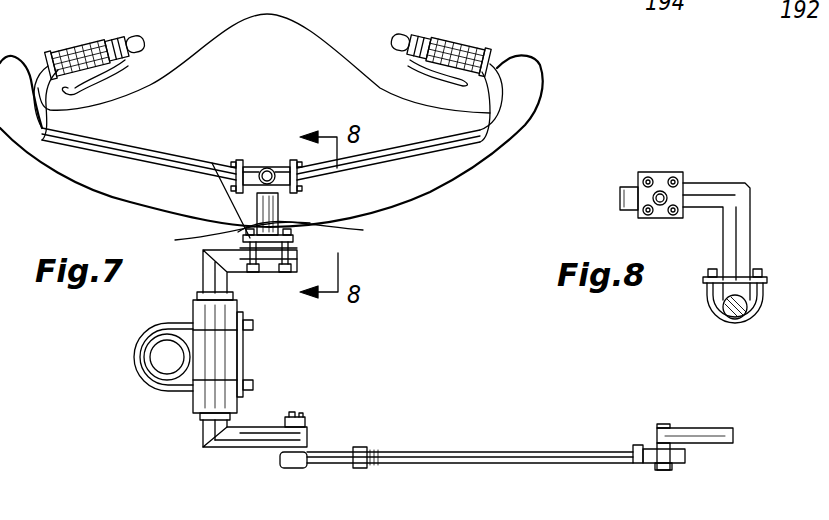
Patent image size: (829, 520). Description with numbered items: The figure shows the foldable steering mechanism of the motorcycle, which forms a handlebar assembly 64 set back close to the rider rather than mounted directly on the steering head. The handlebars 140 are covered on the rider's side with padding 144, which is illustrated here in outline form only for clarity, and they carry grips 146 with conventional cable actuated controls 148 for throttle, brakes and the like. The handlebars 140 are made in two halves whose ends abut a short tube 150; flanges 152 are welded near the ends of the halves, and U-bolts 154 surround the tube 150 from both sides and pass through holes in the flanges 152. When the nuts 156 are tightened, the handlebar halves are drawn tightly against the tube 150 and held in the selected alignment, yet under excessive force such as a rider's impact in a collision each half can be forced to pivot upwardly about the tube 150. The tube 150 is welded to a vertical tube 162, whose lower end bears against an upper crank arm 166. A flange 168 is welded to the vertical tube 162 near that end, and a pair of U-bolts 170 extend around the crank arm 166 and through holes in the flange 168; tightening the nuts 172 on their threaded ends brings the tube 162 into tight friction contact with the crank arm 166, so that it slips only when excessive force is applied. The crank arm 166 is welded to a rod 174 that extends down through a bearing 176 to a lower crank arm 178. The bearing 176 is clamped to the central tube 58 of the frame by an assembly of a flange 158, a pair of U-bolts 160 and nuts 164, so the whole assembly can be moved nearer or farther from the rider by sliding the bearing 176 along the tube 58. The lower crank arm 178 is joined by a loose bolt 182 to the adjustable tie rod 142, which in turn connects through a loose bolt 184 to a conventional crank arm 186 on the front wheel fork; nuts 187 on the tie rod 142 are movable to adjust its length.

In FIG. 7, the central tube 58 is at (157, 383).
In FIG. 7, the handlebar assembly 64 is at (72, 206).
In FIG. 7, the handlebars 140 is at (150, 153).
In FIG. 8, the handlebars 140 is at (683, 193).
In FIG. 7, the tie rod 142 is at (530, 420).
In FIG. 7, the padding 144 is at (225, 32).
In FIG. 7, the grips 146 is at (70, 52).
In FIG. 7, the cable actuated controls 148 is at (72, 92).
In FIG. 7, the tube 150 is at (265, 163).
In FIG. 8, the tube 150 is at (623, 200).
In FIG. 7, the flanges 152 is at (243, 163).
In FIG. 8, the flanges 152 is at (640, 218).
In FIG. 7, the U-bolts 154 is at (221, 207).
In FIG. 7, the nuts 156 is at (230, 176).
In FIG. 8, the nuts 156 is at (671, 178).
In FIG. 7, the flange 158 is at (243, 357).
In FIG. 7, the U-bolts 160 is at (150, 325).
In FIG. 7, the vertical tube 162 is at (203, 268).
In FIG. 8, the vertical tube 162 is at (750, 247).
In FIG. 7, the nuts 164 is at (253, 336).
In FIG. 7, the upper crank arm 166 is at (272, 280).
In FIG. 8, the upper crank arm 166 is at (740, 320).
In FIG. 7, the flange 168 is at (300, 240).
In FIG. 8, the flange 168 is at (760, 283).
In FIG. 7, the U-bolts 170 is at (297, 258).
In FIG. 8, the U-bolts 170 is at (723, 312).
In FIG. 7, the nuts 172 is at (320, 228).
In FIG. 8, the nuts 172 is at (703, 270).
In FIG. 7, the rod 174 is at (203, 283).
In FIG. 7, the bearing 176 is at (203, 403).
In FIG. 7, the lower crank arm 178 is at (238, 442).
In FIG. 7, the loose bolt 182 is at (293, 420).
In FIG. 7, the loose bolt 184 is at (670, 468).
In FIG. 7, the crank arm 186 is at (717, 430).
In FIG. 7, the nuts 187 is at (360, 450).